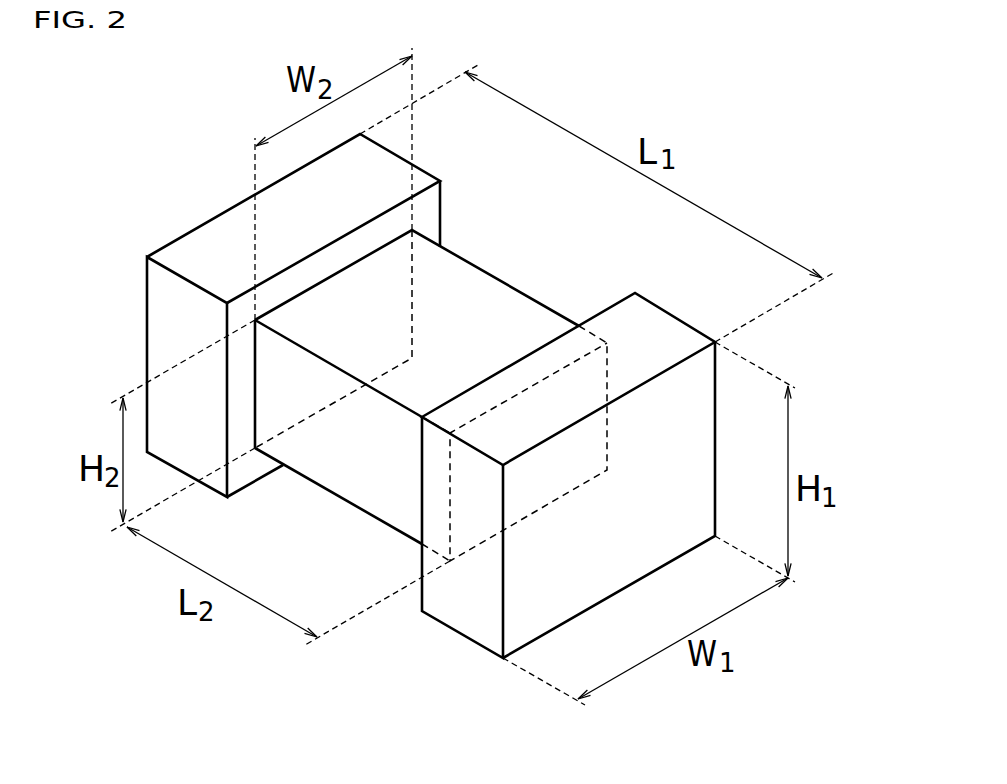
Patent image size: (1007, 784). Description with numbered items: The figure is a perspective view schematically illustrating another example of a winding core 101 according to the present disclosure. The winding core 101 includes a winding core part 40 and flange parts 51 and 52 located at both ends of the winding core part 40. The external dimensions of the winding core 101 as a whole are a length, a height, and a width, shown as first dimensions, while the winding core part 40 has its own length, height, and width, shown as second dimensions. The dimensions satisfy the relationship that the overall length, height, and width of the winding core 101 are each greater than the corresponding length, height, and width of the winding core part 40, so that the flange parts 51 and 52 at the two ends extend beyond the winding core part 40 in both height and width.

The winding core 101 is at (205, 173).
The winding core part 40 is at (492, 297).
The flange part 51 is at (158, 298).
The flange part 52 is at (460, 613).